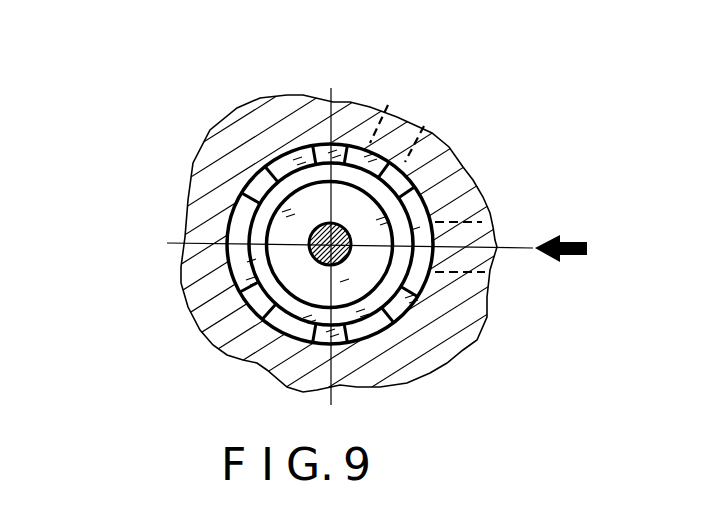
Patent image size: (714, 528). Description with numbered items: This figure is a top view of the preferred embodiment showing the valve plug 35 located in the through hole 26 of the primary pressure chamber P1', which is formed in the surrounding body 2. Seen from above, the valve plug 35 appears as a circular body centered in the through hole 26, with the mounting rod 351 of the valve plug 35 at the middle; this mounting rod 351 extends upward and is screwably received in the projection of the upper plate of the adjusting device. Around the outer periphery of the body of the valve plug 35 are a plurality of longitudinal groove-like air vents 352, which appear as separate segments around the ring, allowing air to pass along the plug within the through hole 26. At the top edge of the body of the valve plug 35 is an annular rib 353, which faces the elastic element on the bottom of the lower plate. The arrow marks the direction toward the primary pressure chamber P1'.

The housing body 2 is at (437, 360).
The through hole 26 is at (234, 290).
The valve plug 35 is at (307, 203).
The mounting rod 351 is at (353, 223).
The longitudinal groove-like air vents 352 is at (230, 214).
The annular rib 353 is at (380, 162).
The primary pressure chamber P1' is at (543, 202).